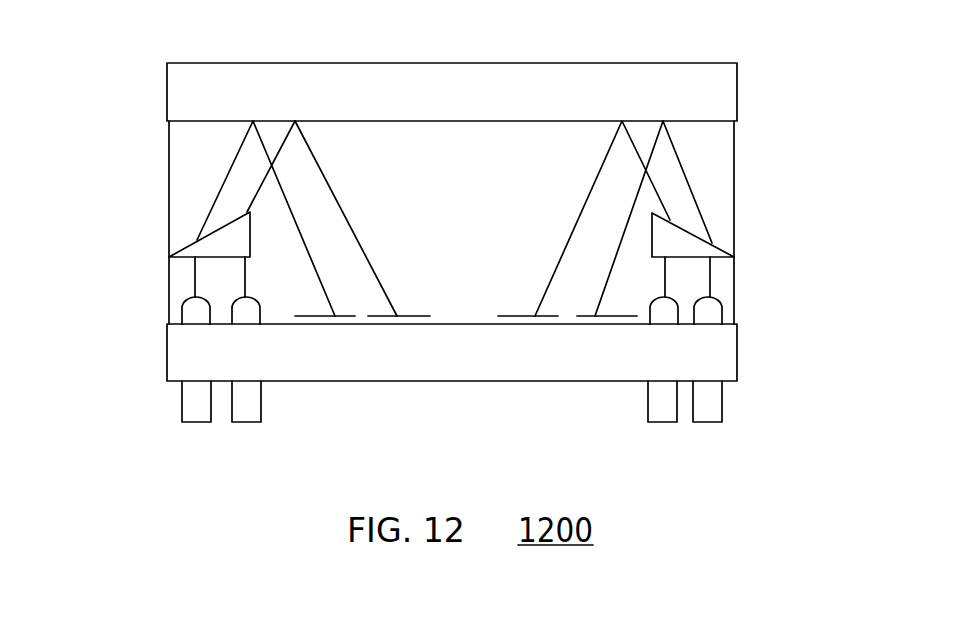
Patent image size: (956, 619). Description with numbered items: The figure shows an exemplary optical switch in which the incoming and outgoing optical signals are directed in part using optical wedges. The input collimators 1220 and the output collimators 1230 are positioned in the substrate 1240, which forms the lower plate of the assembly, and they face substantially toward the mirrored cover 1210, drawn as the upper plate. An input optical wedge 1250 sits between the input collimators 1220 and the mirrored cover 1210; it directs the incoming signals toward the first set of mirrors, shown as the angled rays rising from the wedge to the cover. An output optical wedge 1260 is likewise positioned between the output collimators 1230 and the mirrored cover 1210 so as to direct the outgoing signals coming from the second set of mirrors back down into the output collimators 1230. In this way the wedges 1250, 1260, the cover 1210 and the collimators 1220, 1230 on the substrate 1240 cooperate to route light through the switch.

The mirrored cover 1210 is at (720, 45).
The input collimators 1220 is at (155, 312).
The output collimators 1230 is at (748, 295).
The substrate 1240 is at (743, 355).
The input optical wedge 1250 is at (155, 253).
The output optical wedge 1260 is at (745, 247).